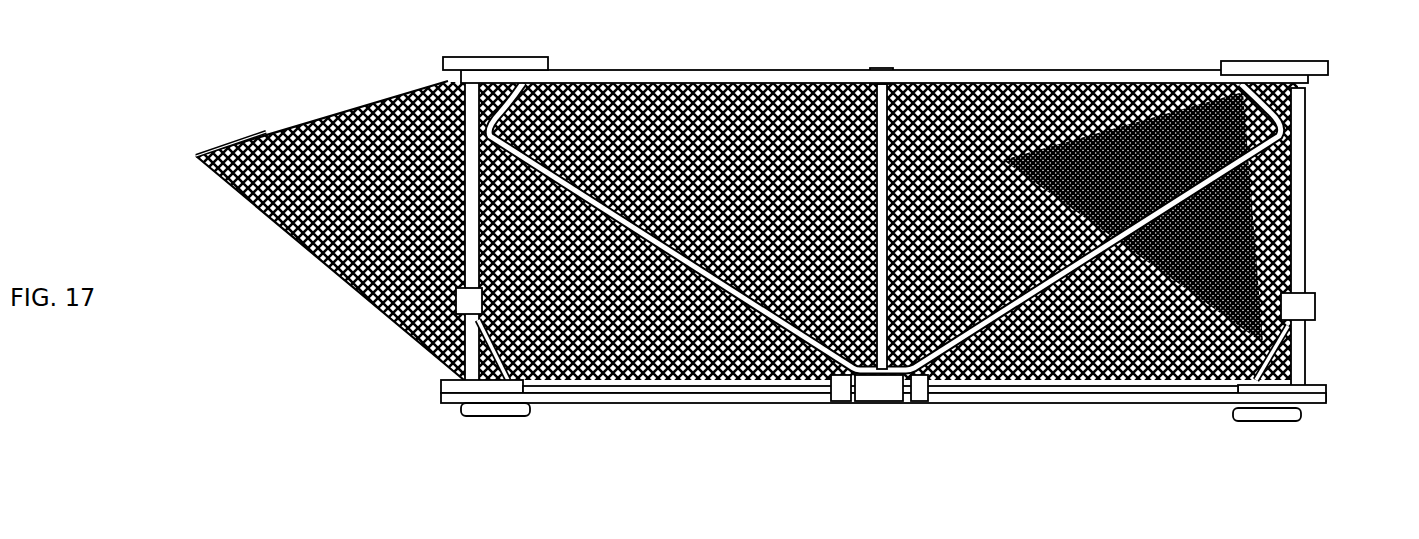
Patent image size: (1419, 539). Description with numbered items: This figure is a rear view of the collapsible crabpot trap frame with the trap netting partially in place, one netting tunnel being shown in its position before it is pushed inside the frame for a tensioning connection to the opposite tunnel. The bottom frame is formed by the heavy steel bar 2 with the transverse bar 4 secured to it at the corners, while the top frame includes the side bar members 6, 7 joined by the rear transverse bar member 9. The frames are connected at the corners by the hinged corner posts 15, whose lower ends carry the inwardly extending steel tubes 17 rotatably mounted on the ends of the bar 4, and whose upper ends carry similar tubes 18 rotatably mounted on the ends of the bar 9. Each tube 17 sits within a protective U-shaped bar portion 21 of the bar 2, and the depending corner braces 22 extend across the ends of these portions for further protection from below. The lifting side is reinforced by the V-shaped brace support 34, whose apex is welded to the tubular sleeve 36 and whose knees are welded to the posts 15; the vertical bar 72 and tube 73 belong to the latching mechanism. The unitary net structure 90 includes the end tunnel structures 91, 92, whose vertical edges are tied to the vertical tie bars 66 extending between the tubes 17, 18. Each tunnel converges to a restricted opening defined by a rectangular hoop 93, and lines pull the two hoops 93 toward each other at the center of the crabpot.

The heavy steel bar 2 is at (758, 390).
The transverse heavy steel bar 4 is at (747, 380).
The side bar member 6 is at (1308, 60).
The side bar member 7 is at (445, 50).
The transverse bar member 9 is at (1100, 72).
The corner post 15 is at (413, 100).
The steel tube 17 is at (452, 371).
The tube 18 is at (490, 68).
The U-shaped bar portion 21 is at (470, 388).
The corner brace 22 is at (487, 403).
The V-shaped brace support 34 is at (1088, 340).
The tubular sleeve 36 is at (872, 372).
The vertical tie bar 66 is at (500, 118).
The vertical bar 72 is at (863, 107).
The tube 73 is at (873, 62).
The net structure 90 is at (668, 340).
The right tunnel structure 91 is at (330, 270).
The left tunnel structure 92 is at (1175, 340).
The rectangular hoop 93 is at (212, 150).